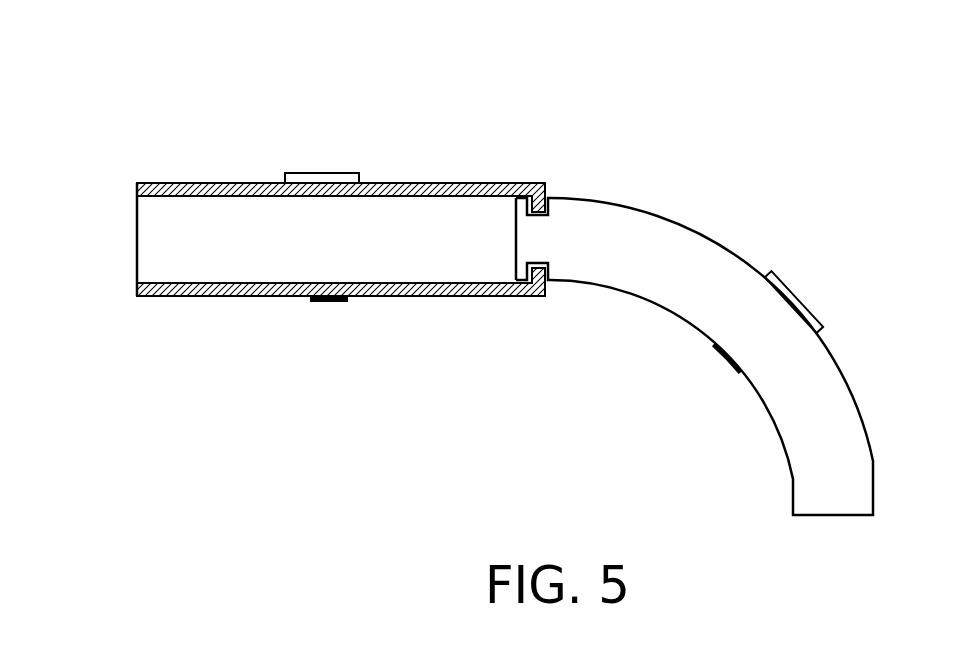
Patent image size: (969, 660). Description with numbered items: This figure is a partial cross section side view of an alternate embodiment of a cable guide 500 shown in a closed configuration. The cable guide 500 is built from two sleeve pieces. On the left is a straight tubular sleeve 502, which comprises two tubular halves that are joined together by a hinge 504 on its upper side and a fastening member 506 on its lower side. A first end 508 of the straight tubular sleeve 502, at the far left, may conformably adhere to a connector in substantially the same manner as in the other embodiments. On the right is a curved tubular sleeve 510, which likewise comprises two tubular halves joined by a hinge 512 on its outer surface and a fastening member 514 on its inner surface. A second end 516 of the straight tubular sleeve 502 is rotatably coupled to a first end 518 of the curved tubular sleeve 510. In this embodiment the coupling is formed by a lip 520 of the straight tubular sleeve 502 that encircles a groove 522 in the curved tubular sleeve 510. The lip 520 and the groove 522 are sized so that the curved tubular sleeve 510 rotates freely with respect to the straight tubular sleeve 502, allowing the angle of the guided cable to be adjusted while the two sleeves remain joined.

The cable guide 500 is at (222, 88).
The straight tubular sleeve 502 is at (435, 183).
The hinge 504 is at (316, 173).
The fastening member 506 is at (328, 303).
The first end 508 is at (118, 278).
The curved tubular sleeve 510 is at (778, 434).
The hinge 512 is at (806, 292).
The fastening member 514 is at (727, 362).
The second end 516 is at (543, 311).
The first end 518 is at (488, 236).
The lip 520 is at (543, 184).
The groove 522 is at (538, 263).